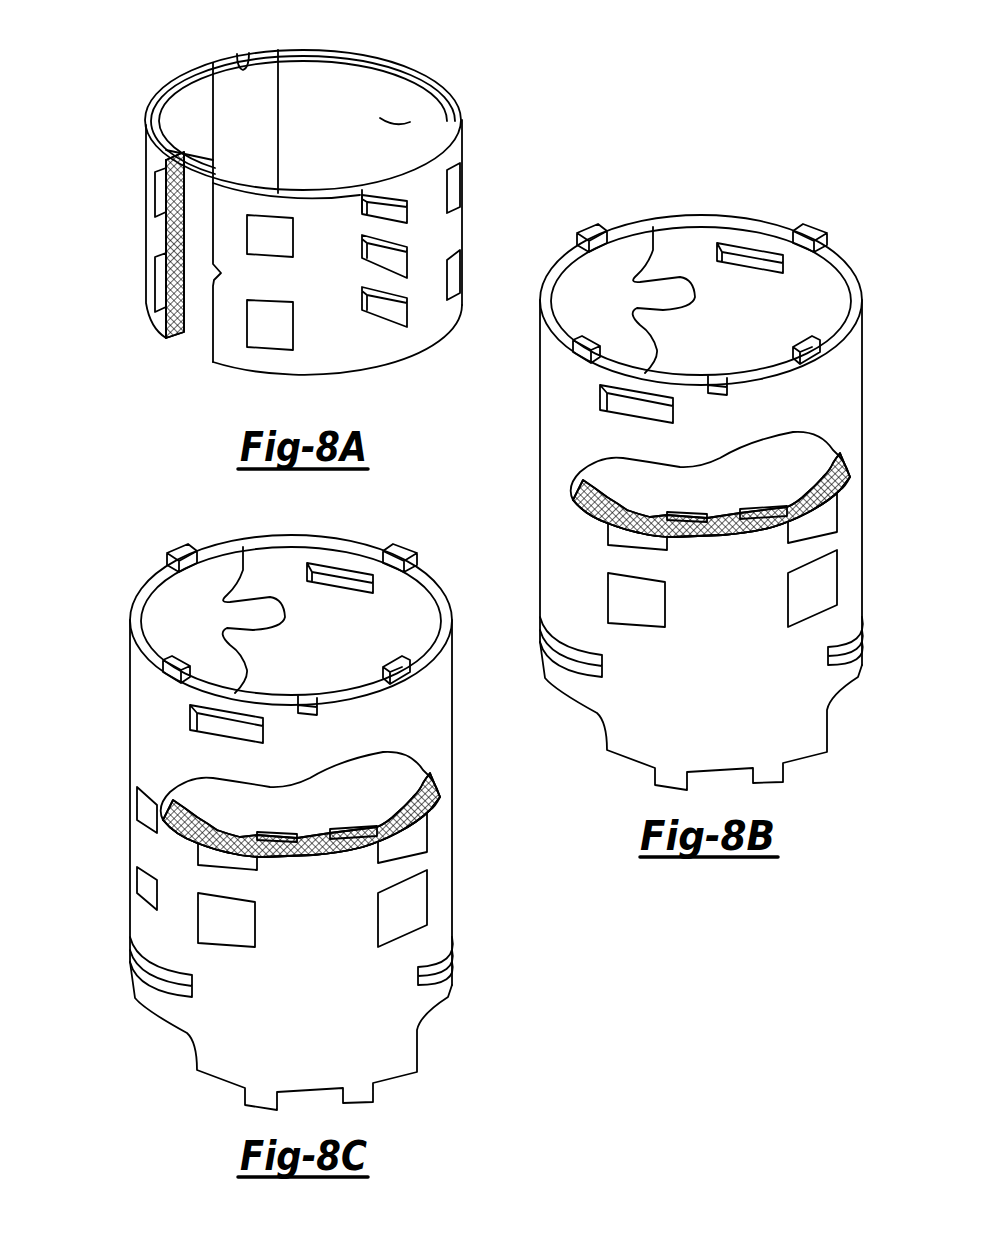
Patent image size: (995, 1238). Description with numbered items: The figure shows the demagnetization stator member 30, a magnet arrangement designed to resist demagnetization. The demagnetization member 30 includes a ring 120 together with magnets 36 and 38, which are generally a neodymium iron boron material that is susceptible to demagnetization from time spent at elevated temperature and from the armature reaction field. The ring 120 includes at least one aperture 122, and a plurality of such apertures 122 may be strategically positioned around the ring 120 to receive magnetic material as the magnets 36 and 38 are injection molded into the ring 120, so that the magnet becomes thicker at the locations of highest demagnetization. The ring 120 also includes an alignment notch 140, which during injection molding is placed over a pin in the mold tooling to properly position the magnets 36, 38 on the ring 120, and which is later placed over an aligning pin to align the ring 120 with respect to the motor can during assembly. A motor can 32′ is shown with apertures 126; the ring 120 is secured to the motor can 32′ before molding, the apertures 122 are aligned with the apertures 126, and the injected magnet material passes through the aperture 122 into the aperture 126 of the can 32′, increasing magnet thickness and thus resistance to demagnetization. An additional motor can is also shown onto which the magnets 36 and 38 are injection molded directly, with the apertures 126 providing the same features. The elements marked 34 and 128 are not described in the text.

In FIG. 8A, the demagnetization stator member 30 is at (453, 216).
In FIG. 8A, the ring 120 is at (390, 63).
In FIG. 8B, the ring 120 is at (572, 485).
In FIG. 8A, the alignment notch 140 is at (241, 55).
In FIG. 8A, the band end flap 34 is at (157, 103).
In FIG. 8A, the magnet 36 is at (188, 178).
In FIG. 8B, the magnet 36 is at (670, 514).
In FIG. 8C, the magnet 36 is at (261, 810).
In FIG. 8A, the magnet 38 is at (397, 128).
In FIG. 8B, the magnet 38 is at (763, 511).
In FIG. 8C, the magnet 38 is at (353, 803).
In FIG. 8A, the aperture 122 is at (157, 277).
In FIG. 8B, the aperture 122 is at (590, 492).
In FIG. 8B, the motor can 32′ is at (560, 535).
In FIG. 8B, the aperture 126 is at (800, 533).
In FIG. 8C, the aperture 126 is at (312, 894).
In FIG. 8C, the side slots 128 is at (106, 848).